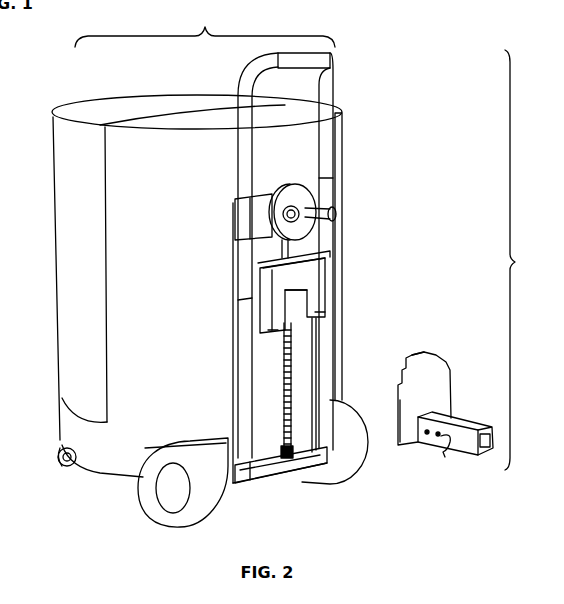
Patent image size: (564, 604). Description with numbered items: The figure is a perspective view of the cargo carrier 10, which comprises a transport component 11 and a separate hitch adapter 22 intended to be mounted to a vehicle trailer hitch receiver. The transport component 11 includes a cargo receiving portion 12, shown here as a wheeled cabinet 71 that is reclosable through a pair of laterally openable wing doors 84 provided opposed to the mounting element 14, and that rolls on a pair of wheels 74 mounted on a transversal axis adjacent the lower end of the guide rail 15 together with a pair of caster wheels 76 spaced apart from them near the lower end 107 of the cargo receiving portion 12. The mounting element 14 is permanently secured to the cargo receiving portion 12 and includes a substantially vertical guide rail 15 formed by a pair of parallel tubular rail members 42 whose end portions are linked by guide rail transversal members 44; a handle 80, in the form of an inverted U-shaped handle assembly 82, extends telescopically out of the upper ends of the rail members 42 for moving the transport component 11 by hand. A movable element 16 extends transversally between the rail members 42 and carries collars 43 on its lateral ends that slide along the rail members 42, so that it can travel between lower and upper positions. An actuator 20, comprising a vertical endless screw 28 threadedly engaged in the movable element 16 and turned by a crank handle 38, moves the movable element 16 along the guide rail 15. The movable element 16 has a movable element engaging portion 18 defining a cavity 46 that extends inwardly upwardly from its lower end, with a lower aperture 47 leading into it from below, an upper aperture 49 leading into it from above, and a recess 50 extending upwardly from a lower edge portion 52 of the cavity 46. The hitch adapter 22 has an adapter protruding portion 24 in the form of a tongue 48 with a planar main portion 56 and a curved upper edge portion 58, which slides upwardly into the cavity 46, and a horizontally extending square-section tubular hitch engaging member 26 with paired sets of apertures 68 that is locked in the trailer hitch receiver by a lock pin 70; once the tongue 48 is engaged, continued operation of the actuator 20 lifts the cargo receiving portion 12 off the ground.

The cargo carrier 10 is at (522, 260).
The transport component 11 is at (205, 23).
The cargo receiving portion 12 is at (343, 137).
The mounting element 14 is at (337, 198).
The guide rail 15 is at (335, 178).
The movable element 16 is at (335, 260).
The movable element engaging portion 18 is at (280, 295).
The actuator 20 is at (271, 242).
The hitch adapter 22 is at (427, 472).
The adapter protruding portion 24 is at (413, 355).
The hitch engaging member 26 is at (457, 417).
The endless screw 28 is at (285, 440).
The crank handle 38 is at (288, 184).
The rail members 42 is at (238, 367).
The collars 43 is at (244, 298).
The guide rail transversal members 44 is at (276, 250).
The cavity 46 is at (268, 326).
The lower aperture 47 is at (313, 332).
The tongue 48 is at (422, 391).
The upper aperture 49 is at (265, 265).
The recess 50 is at (283, 342).
The lower edge portion 52 is at (272, 330).
The main portion 56 is at (413, 432).
The curved upper edge portion 58 is at (423, 357).
The apertures 68 is at (427, 440).
The lock pin 70 is at (443, 455).
The wheeled cabinet 71 is at (210, 108).
The wheels 74 is at (168, 503).
The caster wheels 76 is at (63, 470).
The handle 80 is at (331, 54).
The handle assembly 82 is at (334, 95).
The wing doors 84 is at (160, 96).
The lower end 107 is at (107, 475).